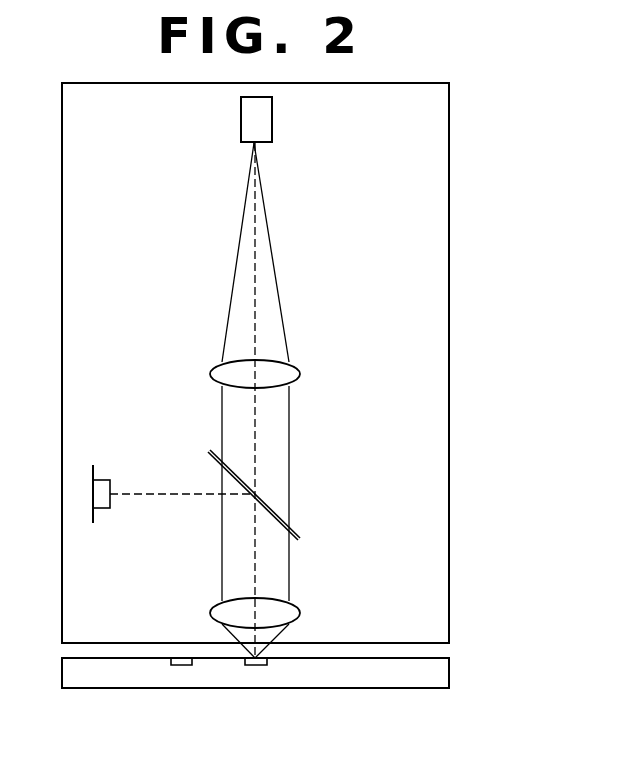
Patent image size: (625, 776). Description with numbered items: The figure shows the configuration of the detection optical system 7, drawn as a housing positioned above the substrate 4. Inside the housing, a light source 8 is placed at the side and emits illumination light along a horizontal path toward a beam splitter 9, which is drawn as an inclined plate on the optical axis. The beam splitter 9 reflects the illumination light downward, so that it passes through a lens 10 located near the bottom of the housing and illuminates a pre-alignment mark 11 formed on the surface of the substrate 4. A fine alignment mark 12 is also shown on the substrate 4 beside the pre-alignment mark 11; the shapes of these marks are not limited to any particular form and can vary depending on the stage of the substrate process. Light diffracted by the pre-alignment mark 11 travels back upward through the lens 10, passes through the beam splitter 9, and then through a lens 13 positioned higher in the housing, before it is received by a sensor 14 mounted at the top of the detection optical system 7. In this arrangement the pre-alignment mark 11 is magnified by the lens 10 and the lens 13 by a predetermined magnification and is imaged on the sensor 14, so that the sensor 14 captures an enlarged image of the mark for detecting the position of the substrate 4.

The substrate 4 is at (438, 672).
The detection optical system 7 is at (450, 365).
The light source 8 is at (100, 480).
The beam splitter 9 is at (300, 532).
The lens 10 is at (288, 613).
The pre-alignment mark 11 is at (257, 665).
The fine alignment mark 12 is at (183, 665).
The lens 13 is at (290, 377).
The sensor 14 is at (261, 115).